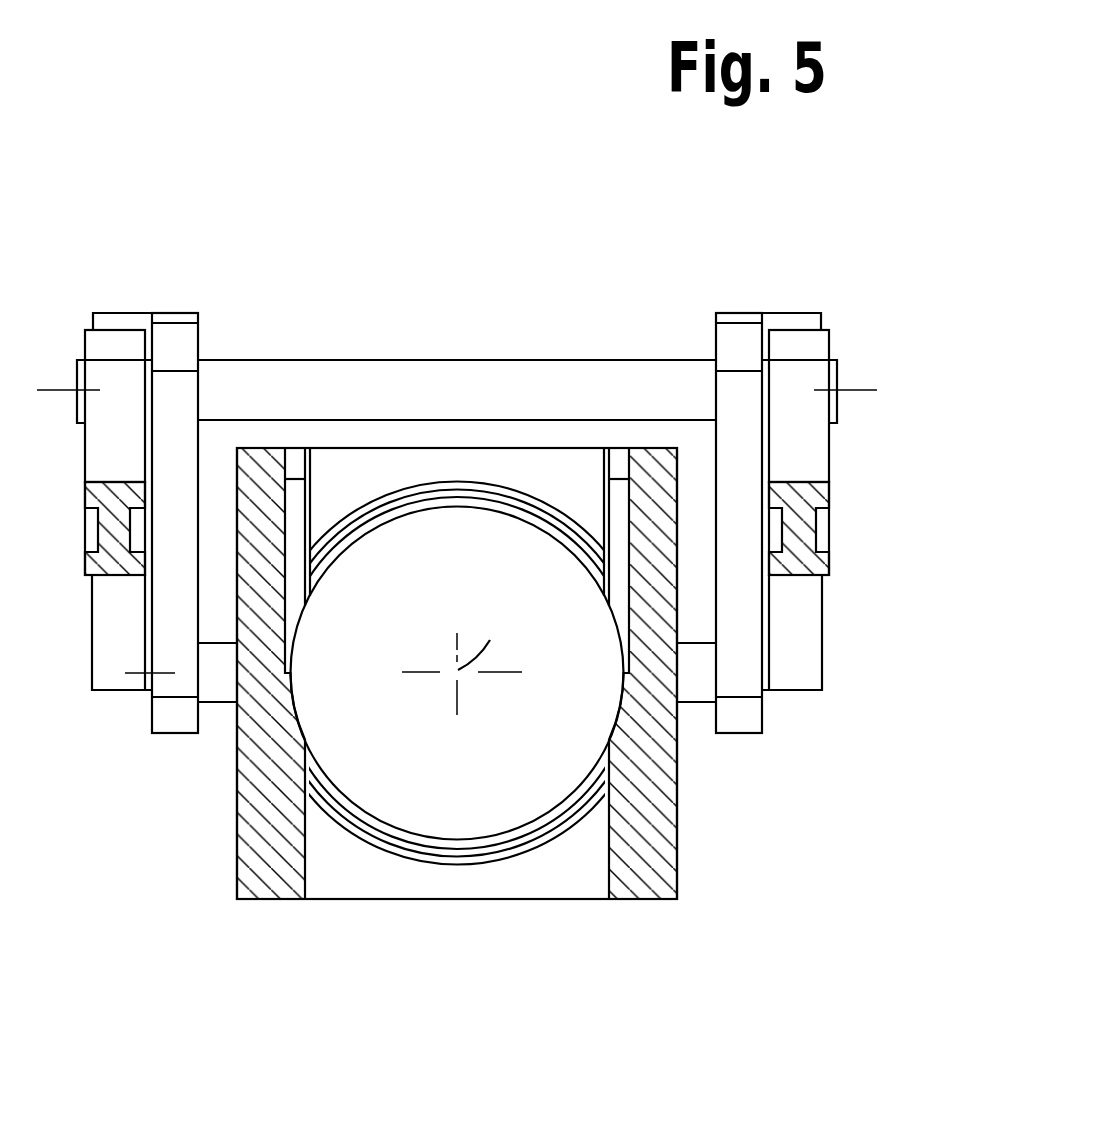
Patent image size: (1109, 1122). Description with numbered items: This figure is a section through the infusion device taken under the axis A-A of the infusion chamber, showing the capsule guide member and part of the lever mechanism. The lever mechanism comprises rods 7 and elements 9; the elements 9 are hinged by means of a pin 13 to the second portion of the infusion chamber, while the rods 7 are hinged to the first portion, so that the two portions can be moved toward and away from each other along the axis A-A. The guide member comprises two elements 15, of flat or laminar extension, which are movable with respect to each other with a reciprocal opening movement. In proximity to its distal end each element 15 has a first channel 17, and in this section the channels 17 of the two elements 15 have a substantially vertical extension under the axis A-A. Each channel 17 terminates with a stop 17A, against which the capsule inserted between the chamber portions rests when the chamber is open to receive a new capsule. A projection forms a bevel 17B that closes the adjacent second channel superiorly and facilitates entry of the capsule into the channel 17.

The rods 7 is at (115, 462).
The elements 9 is at (117, 625).
The pin 13 is at (431, 378).
The elements 15 is at (252, 793).
The first channel 17 is at (296, 511).
The stop 17A is at (305, 742).
The bevel 17B is at (298, 458).